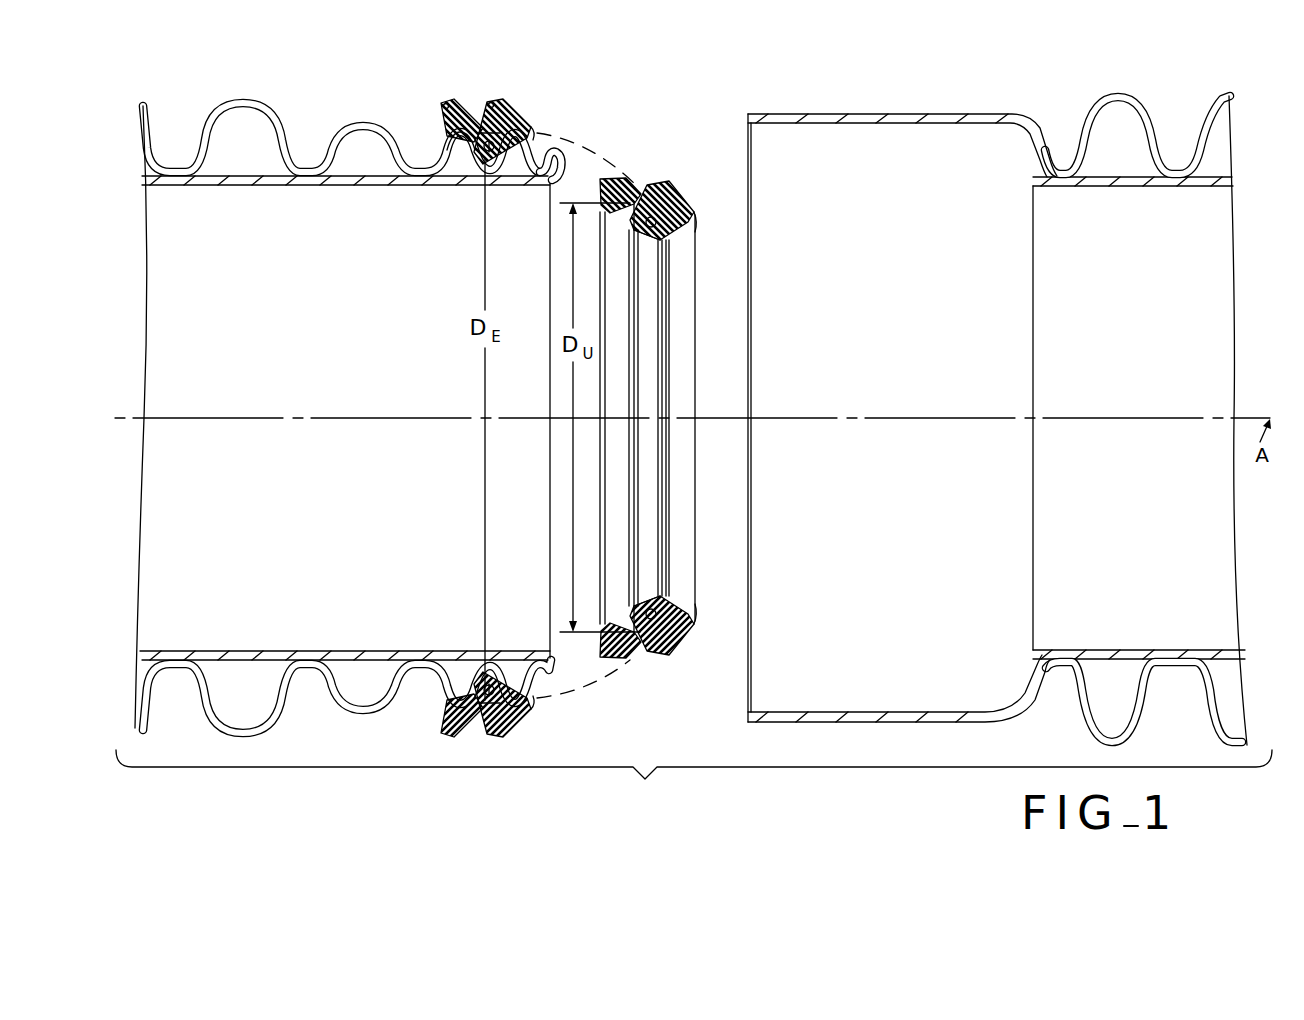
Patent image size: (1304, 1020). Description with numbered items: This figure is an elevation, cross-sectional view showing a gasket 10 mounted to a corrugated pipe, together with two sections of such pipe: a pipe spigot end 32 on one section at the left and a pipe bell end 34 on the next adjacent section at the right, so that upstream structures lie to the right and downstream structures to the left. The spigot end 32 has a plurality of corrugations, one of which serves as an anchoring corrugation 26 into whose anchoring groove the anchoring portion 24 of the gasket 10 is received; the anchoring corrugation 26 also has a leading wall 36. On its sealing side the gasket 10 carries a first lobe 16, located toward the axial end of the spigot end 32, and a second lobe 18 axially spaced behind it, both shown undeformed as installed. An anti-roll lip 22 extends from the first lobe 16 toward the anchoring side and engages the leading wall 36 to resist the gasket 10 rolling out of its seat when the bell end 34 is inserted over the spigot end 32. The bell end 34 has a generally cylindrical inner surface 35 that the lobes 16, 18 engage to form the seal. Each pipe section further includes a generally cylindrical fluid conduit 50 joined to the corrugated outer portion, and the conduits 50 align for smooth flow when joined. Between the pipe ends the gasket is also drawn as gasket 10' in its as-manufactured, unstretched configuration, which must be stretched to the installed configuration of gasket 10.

The gasket 10 is at (527, 365).
The gasket in unstretched configuration 10' is at (647, 356).
The first lobe 16 is at (494, 104).
The second lobe 18 is at (445, 104).
The anti-roll lip 22 is at (532, 130).
The anchoring portion 24 is at (492, 158).
The anchoring corrugation 26 is at (461, 162).
The spigot end 32 is at (320, 70).
The bell end 34 is at (963, 75).
The inner surface 35 is at (840, 125).
The leading wall 36 is at (557, 178).
The fluid conduit 50 is at (284, 186).